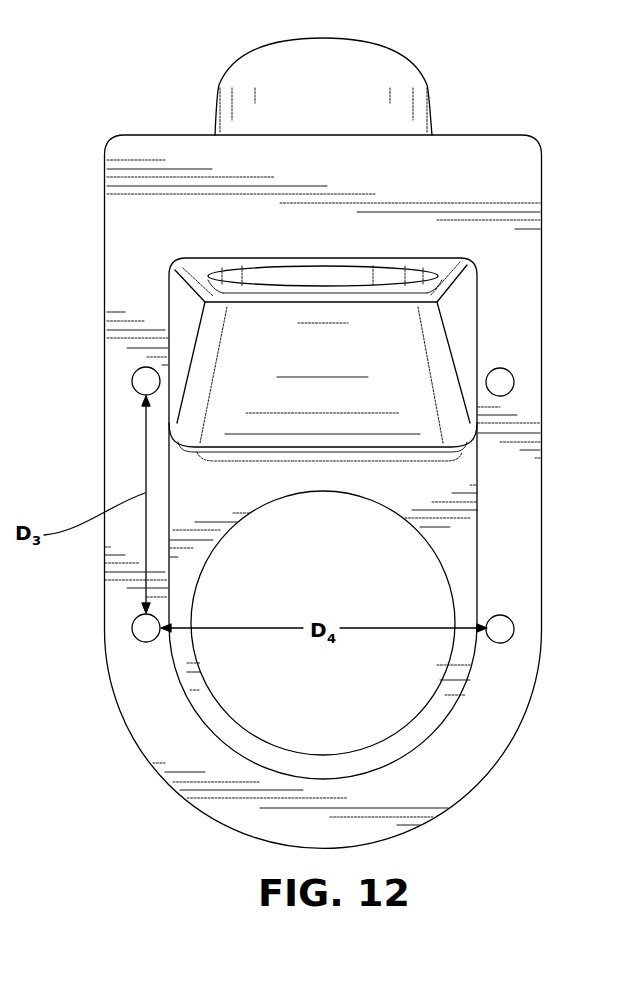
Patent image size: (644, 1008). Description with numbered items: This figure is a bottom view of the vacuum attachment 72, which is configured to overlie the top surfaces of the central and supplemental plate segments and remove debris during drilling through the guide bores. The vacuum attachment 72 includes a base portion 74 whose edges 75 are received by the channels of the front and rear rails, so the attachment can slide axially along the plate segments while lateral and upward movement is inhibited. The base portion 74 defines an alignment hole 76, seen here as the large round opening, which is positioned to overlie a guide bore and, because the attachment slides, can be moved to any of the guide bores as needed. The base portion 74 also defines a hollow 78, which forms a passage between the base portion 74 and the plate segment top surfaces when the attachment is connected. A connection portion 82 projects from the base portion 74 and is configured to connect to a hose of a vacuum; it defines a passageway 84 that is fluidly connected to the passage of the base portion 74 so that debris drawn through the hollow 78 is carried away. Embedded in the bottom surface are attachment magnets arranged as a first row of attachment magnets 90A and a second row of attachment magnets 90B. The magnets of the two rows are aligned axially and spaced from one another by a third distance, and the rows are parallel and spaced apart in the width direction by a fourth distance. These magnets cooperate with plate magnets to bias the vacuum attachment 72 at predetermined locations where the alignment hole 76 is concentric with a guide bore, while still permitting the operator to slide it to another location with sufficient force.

The vacuum attachment 72 is at (322, 465).
The base portion 74 is at (480, 151).
The edges of the base portion 75 is at (104, 482).
The alignment hole 76 is at (436, 553).
The hollow 78 is at (188, 313).
The connection portion 82 is at (380, 60).
The passageway 84 is at (255, 277).
The first row of attachment magnets 90A is at (142, 381).
The second row of attachment magnets 90B is at (504, 383).